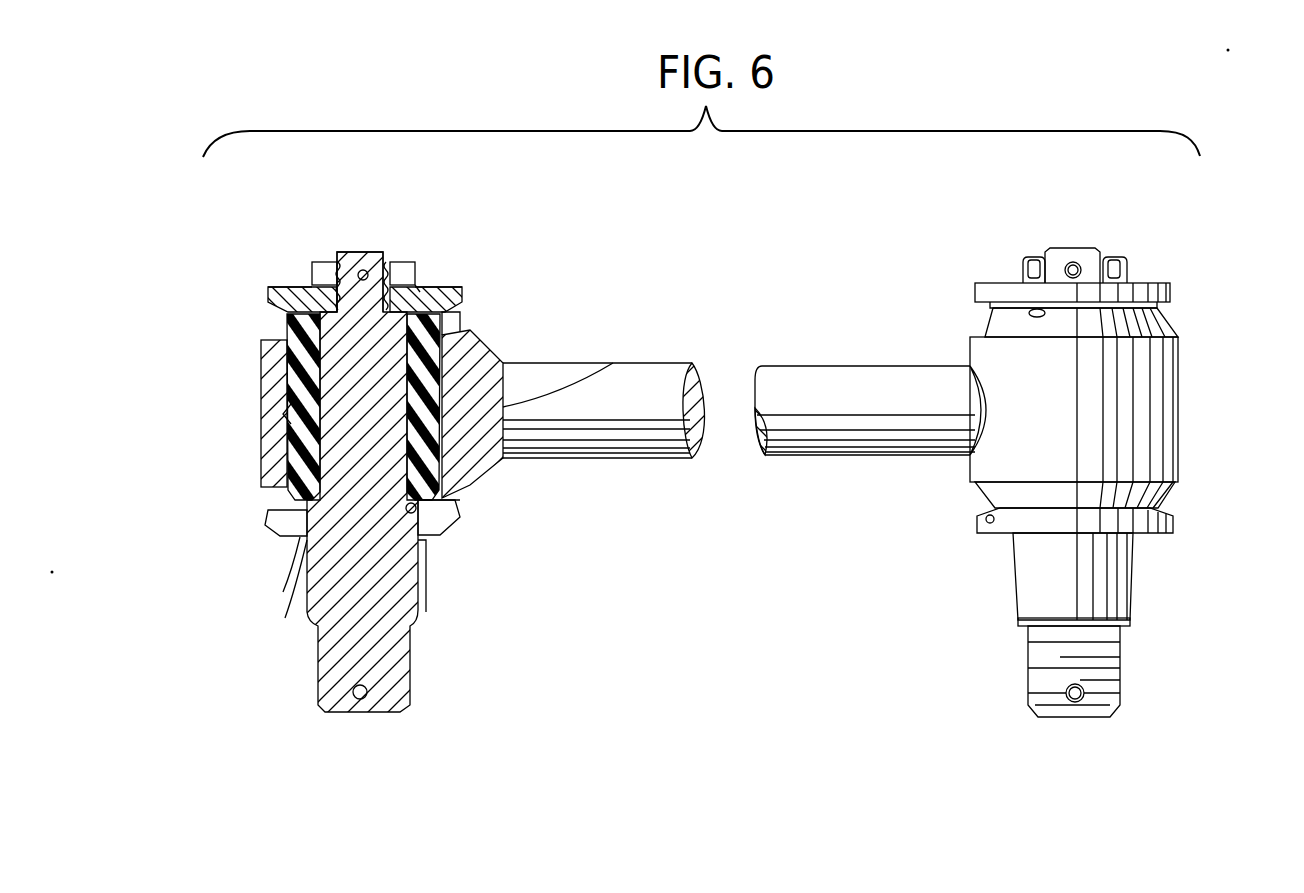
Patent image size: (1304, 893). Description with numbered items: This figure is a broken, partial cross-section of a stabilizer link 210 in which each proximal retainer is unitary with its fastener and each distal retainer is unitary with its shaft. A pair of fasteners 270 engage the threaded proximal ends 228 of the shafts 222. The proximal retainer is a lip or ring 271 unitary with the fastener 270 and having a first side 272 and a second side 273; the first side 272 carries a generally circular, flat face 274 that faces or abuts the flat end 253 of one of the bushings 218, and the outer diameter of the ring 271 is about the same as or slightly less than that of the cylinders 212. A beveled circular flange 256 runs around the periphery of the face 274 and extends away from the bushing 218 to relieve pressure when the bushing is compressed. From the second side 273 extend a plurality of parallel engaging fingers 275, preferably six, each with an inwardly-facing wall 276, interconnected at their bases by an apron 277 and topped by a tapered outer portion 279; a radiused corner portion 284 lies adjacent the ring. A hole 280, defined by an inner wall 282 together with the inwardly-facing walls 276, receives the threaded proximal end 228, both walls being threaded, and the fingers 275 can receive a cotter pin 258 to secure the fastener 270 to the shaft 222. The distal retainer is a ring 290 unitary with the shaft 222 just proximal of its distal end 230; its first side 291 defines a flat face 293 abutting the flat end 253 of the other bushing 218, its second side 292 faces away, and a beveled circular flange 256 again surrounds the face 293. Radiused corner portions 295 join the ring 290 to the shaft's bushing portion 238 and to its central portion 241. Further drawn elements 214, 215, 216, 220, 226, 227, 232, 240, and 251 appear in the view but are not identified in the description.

The stabilizer link 210 is at (746, 250).
The cylinders 212 is at (266, 393).
The housing wall 214 is at (472, 372).
The seal member 215 is at (300, 328).
The pipe 216 is at (848, 460).
The bushings 218 is at (544, 372).
The flange plate 220 is at (436, 310).
The shafts 222 is at (423, 606).
The retaining ring 226 is at (265, 352).
The notch 227 is at (285, 414).
The proximal ends 228 is at (412, 286).
The distal end 230 is at (412, 666).
The hole 232 is at (363, 269).
The bushing portion 238 is at (290, 508).
The stem body 240 is at (420, 574).
The central portion 241 is at (428, 548).
The line 251 is at (290, 388).
The flat end 253 is at (436, 314).
The circular flange 256 is at (444, 334).
The cotter pins 258 is at (1073, 262).
The fasteners 270 is at (305, 277).
The ring 271 is at (446, 320).
The first side 272 is at (283, 316).
The second side 273 is at (283, 287).
The face 274 is at (328, 262).
The engaging fingers 275 is at (314, 264).
The inwardly-facing wall 276 is at (390, 278).
The apron 277 is at (1034, 258).
The tapered outer portion 279 is at (1094, 260).
The hole 280 is at (386, 256).
The inner wall 282 is at (340, 262).
The radiused corner portion 284 is at (422, 300).
The rings 290 is at (464, 529).
The first side 291 is at (278, 532).
The second side 292 is at (272, 545).
The face 293 is at (1025, 500).
The radiused corner portions 295 is at (462, 500).